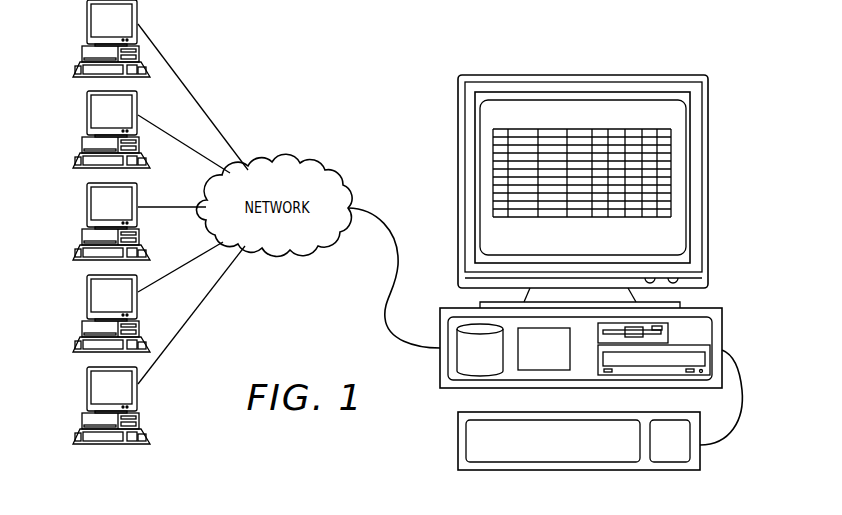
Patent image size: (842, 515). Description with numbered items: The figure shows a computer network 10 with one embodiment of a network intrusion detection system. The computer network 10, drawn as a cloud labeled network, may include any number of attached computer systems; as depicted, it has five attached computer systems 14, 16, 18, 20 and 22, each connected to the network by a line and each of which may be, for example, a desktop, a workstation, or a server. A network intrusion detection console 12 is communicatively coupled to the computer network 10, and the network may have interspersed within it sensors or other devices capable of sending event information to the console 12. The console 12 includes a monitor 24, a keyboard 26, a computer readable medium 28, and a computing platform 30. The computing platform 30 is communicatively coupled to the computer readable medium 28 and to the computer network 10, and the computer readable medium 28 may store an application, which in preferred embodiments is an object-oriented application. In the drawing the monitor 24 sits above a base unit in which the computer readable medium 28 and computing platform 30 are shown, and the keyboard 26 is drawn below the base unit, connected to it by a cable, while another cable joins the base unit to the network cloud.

The computer network 10 is at (520, 43).
The network intrusion detection console 12 is at (740, 126).
The attached computer system 14 is at (82, 53).
The attached computer system 16 is at (82, 144).
The attached computer system 18 is at (82, 236).
The attached computer system 20 is at (82, 328).
The attached computer system 22 is at (82, 420).
The monitor 24 is at (708, 184).
The keyboard 26 is at (458, 440).
The computer readable medium 28 is at (491, 361).
The computing platform 30 is at (555, 360).